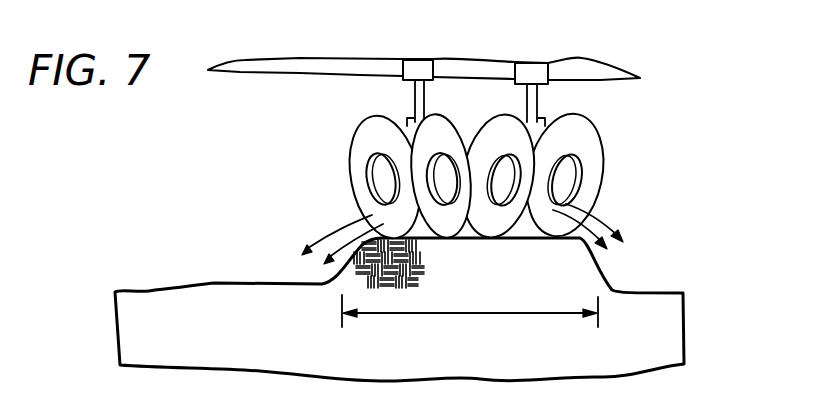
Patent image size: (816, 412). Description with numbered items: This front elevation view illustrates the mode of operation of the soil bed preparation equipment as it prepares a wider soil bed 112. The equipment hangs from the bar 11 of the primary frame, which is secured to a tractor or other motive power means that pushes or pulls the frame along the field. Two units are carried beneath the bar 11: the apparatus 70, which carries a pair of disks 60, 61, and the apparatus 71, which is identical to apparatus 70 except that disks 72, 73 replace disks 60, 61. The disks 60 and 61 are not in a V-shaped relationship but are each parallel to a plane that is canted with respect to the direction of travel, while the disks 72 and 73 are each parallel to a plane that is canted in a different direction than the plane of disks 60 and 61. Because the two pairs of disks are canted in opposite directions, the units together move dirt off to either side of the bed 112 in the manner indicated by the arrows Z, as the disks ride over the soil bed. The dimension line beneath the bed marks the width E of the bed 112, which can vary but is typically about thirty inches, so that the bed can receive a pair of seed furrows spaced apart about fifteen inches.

The bar 11 is at (430, 66).
The disk 73 is at (389, 121).
The soil bed 112 is at (605, 285).
The soil bed preparation apparatus 70 is at (581, 125).
The apparatus 71 is at (351, 177).
The disk 72 is at (352, 141).
The disk 60 is at (503, 122).
The disk 61 is at (596, 161).
The arrows Z is at (312, 238).
The width of bed E is at (450, 314).